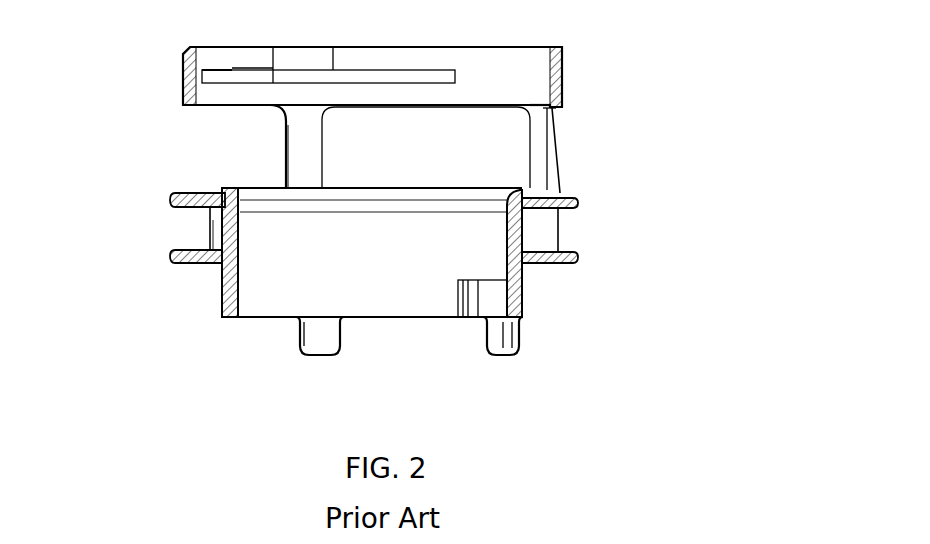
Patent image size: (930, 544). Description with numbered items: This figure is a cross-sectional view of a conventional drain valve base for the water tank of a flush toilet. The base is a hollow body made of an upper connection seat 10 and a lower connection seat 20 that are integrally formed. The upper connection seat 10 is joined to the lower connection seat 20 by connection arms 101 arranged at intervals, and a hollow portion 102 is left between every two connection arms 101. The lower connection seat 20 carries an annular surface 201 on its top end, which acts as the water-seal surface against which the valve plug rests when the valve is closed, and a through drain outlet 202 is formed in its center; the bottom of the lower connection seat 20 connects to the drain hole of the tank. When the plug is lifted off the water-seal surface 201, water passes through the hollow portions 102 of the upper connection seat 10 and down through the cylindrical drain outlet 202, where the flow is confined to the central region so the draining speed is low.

The upper connection seat 10 is at (528, 80).
The connection arm 101 is at (303, 142).
The hollow portion 102 is at (500, 160).
The lower connection seat 20 is at (522, 292).
The annular surface (water-seal surface) 201 is at (215, 189).
The drain outlet 202 is at (253, 285).